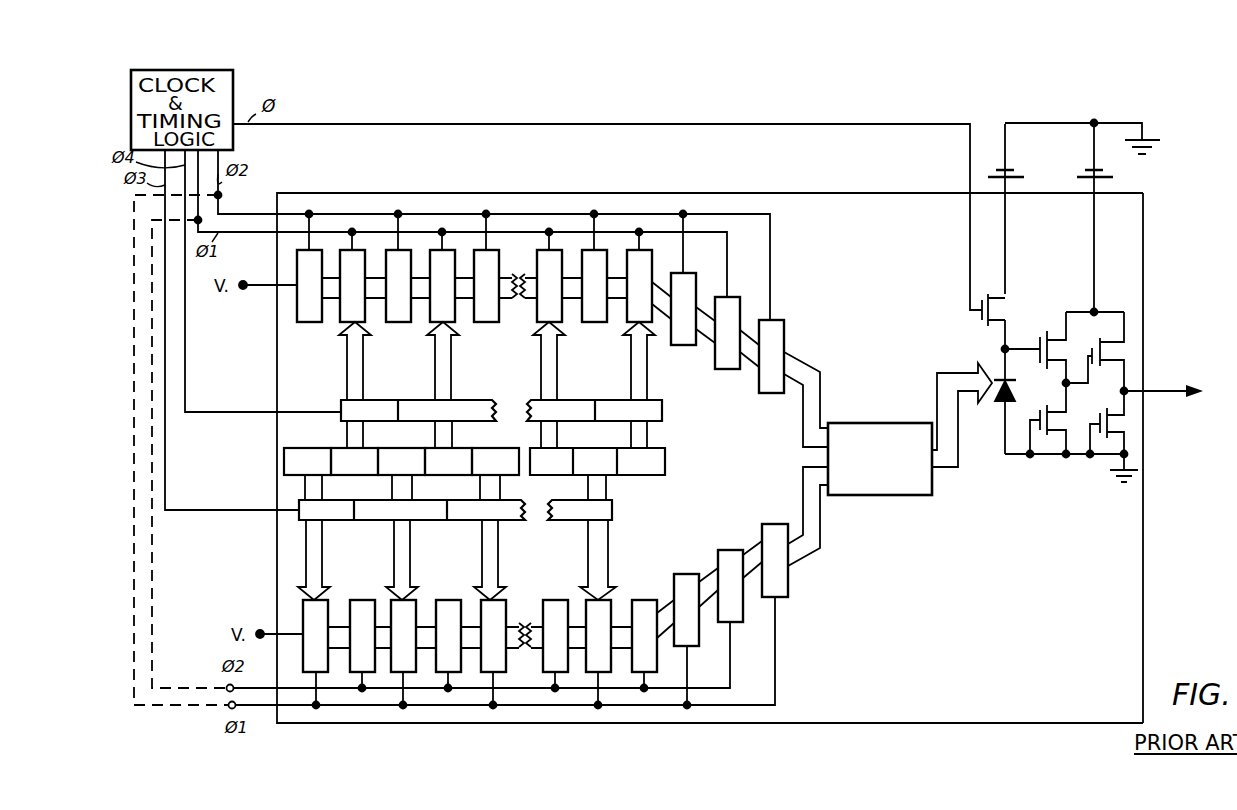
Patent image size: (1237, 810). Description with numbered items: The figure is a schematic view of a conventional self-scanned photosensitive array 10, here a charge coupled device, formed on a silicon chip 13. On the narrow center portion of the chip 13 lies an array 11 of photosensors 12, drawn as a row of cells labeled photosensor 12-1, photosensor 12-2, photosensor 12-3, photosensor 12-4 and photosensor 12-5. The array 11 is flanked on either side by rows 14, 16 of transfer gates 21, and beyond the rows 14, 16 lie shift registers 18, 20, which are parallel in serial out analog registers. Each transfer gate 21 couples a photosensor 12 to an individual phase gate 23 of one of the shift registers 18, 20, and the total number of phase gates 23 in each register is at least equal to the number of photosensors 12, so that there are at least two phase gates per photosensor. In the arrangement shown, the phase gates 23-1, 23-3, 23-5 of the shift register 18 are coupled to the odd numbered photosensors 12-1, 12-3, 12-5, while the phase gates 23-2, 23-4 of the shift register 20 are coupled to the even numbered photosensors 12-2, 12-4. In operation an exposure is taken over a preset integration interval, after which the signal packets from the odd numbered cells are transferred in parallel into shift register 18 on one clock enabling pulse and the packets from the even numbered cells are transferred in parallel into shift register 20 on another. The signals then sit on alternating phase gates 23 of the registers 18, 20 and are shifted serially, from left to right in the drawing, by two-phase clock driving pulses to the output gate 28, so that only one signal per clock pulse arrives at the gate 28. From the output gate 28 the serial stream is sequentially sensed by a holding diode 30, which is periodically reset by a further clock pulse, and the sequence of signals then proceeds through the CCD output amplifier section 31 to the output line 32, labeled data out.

The array 10 is at (520, 182).
The array of photosensors 11 is at (624, 461).
The photosensor 12 is at (663, 476).
The odd numbered photosensor 12-1 is at (307, 461).
The even numbered photosensor 12-2 is at (354, 461).
The odd numbered photosensor 12-3 is at (401, 461).
The even numbered photosensor 12-4 is at (448, 461).
The odd numbered photosensor 12-5 is at (495, 461).
The silicon chip 13 is at (1115, 632).
The row of transfer gates 14 is at (625, 516).
The row of transfer gates 16 is at (655, 402).
The shift register 18 is at (568, 700).
The shift register 20 is at (757, 440).
The transfer gate 21 is at (412, 400).
The phase gate 23 is at (767, 318).
The phase gate 23-1 is at (315, 636).
The phase gate 23-2 is at (352, 286).
The phase gate 23-3 is at (403, 636).
The phase gate 23-4 is at (442, 286).
The phase gate 23-5 is at (493, 636).
The output gate 28 is at (897, 423).
The holding diode 30 is at (992, 400).
The CCD output amplifier section 31 is at (1117, 280).
The output line 32 is at (1190, 366).